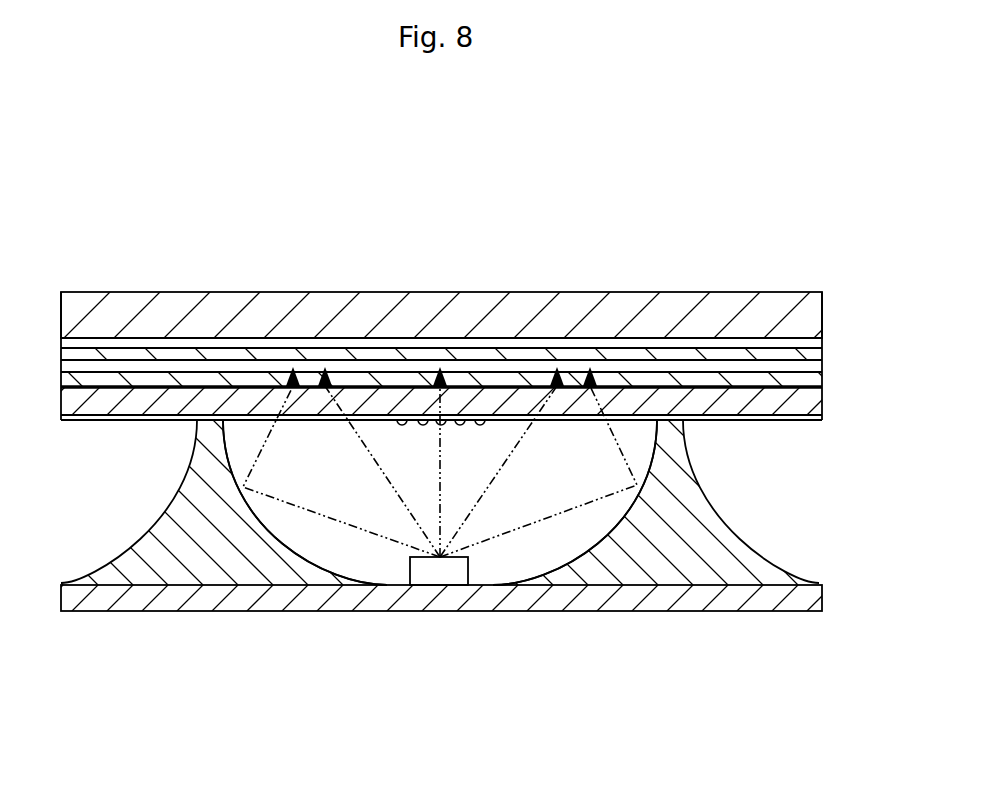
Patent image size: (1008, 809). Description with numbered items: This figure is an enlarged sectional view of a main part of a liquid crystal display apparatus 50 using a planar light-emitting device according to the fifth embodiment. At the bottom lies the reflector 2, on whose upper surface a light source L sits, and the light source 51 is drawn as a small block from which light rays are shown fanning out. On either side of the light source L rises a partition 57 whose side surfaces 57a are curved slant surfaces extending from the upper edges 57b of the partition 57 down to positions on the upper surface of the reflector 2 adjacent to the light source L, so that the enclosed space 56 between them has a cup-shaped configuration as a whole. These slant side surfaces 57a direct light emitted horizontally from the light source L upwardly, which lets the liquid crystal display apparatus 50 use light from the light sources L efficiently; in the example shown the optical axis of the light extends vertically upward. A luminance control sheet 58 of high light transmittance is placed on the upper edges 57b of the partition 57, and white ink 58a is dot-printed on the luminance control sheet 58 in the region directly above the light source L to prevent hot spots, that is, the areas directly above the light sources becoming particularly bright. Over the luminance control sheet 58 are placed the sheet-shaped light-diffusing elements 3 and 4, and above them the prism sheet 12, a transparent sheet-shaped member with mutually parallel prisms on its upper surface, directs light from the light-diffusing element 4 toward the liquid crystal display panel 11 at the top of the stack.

The reflector 2 is at (117, 612).
The sheet-shaped light-diffusing element 3 is at (143, 387).
The sheet-shaped light-diffusing element 4 is at (195, 372).
The liquid crystal display panel 11 is at (553, 292).
The prism sheet 12 is at (283, 358).
The liquid crystal display apparatus 50 is at (653, 249).
The light source 51 is at (466, 611).
The enclosed space 56 is at (505, 557).
The partition 57 is at (157, 520).
The side surfaces of the partition 57a is at (266, 540).
The upper edges of the partition 57b is at (223, 413).
The luminance control sheet 58 is at (783, 420).
The white ink 58a is at (460, 425).
The light source L is at (410, 571).